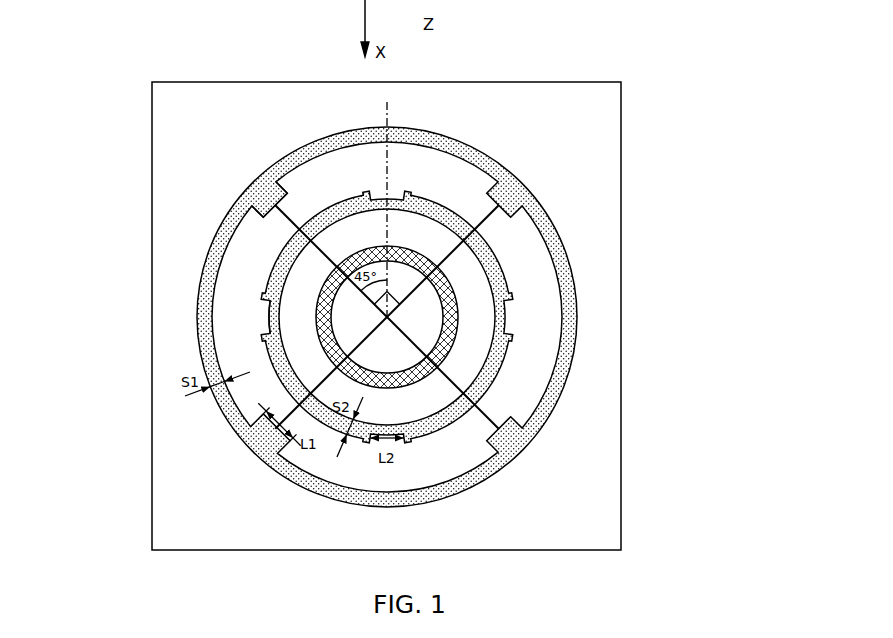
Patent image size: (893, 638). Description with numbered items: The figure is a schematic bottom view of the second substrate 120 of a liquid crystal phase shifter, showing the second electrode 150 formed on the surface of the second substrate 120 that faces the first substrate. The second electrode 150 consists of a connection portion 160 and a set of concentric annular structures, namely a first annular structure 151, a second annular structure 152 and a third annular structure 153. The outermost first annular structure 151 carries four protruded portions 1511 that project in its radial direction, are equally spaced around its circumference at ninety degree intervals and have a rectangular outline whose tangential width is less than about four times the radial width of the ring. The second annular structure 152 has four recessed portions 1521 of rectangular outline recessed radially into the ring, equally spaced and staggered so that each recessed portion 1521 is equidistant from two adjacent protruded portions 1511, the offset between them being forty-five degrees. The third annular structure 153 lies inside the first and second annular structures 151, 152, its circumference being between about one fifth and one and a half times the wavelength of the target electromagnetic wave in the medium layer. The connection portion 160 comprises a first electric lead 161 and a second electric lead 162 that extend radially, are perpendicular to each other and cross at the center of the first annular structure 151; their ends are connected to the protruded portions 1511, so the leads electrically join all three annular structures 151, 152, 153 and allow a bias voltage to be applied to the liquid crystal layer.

The second substrate 120 is at (621, 131).
The second electrode 150 is at (411, 317).
The first annular structure 151 is at (381, 317).
The protruded portion 1511 is at (256, 200).
The second annular structure 152 is at (381, 317).
The recessed portion 1521 is at (270, 300).
The third annular structure 153 is at (443, 290).
The connection portion 160 is at (537, 316).
The first electric lead 161 is at (353, 351).
The second electric lead 162 is at (437, 382).